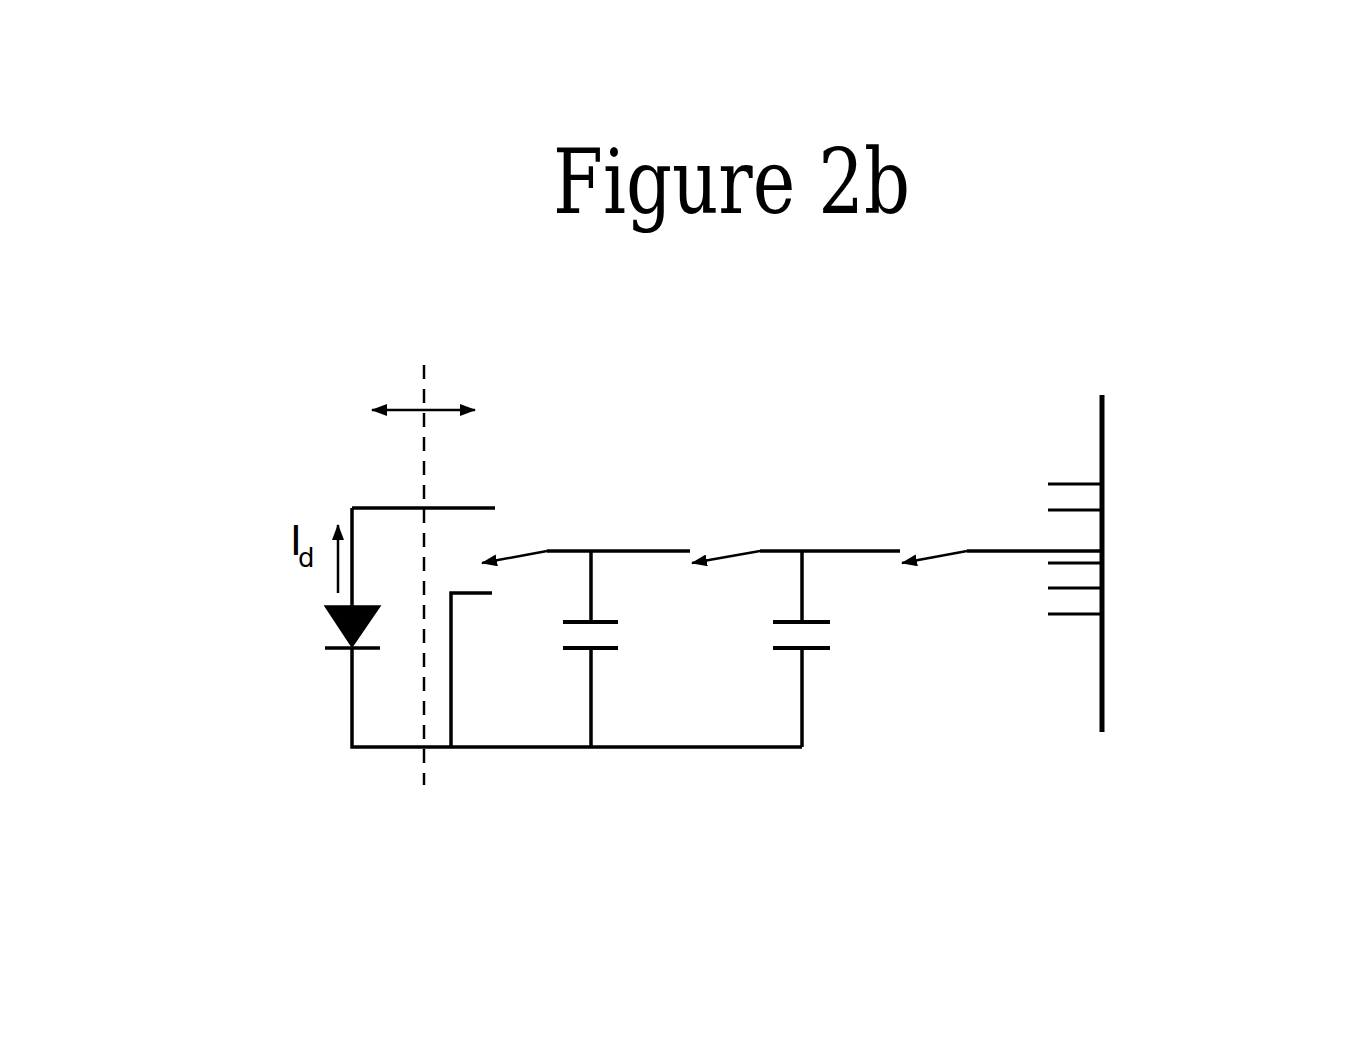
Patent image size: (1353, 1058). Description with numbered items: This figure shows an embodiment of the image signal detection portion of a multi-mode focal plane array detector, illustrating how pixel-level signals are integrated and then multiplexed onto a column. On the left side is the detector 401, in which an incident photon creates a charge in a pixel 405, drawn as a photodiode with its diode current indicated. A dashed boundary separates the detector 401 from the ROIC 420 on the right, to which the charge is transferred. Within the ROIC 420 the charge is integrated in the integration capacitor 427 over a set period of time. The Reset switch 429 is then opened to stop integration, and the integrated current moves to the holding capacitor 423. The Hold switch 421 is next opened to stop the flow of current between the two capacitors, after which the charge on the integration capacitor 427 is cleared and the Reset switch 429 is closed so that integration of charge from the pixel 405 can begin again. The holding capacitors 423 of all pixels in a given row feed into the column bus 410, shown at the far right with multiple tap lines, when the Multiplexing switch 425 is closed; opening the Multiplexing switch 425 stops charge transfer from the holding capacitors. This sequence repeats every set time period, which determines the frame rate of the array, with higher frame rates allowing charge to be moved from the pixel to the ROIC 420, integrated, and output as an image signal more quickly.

The detector 401 is at (210, 380).
The pixel 405 is at (321, 606).
The column bus 410 is at (1109, 390).
The ROIC 420 is at (588, 366).
The Hold switch 421 is at (714, 455).
The holding capacitor 423 is at (809, 661).
The Multiplexing switch 425 is at (918, 451).
The integration capacitor 427 is at (598, 661).
The Reset switch 429 is at (432, 472).